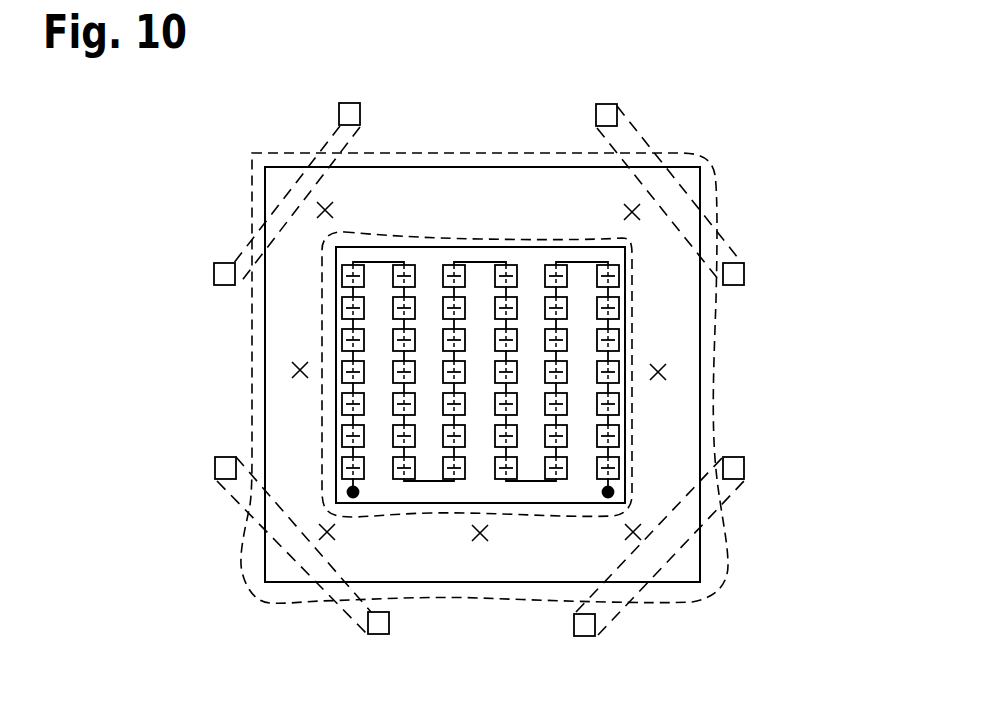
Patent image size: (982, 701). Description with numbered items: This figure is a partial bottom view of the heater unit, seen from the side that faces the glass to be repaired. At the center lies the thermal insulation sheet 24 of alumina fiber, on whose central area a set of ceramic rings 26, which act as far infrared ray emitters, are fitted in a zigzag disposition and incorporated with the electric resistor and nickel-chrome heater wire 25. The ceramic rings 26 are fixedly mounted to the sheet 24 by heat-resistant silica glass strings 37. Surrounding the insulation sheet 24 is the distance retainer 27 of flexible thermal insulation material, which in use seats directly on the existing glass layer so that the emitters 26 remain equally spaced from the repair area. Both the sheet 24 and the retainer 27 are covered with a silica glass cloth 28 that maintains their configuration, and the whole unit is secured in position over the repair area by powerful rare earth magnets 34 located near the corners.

The thermal insulation sheet 24 is at (585, 322).
The heater wire 25 is at (538, 481).
The ceramic rings 26 is at (460, 481).
The distance retainer 27 is at (667, 447).
The silica glass cloth 28 is at (347, 152).
The rare earth magnets 34 is at (357, 103).
The silica glass strings 37 is at (322, 217).